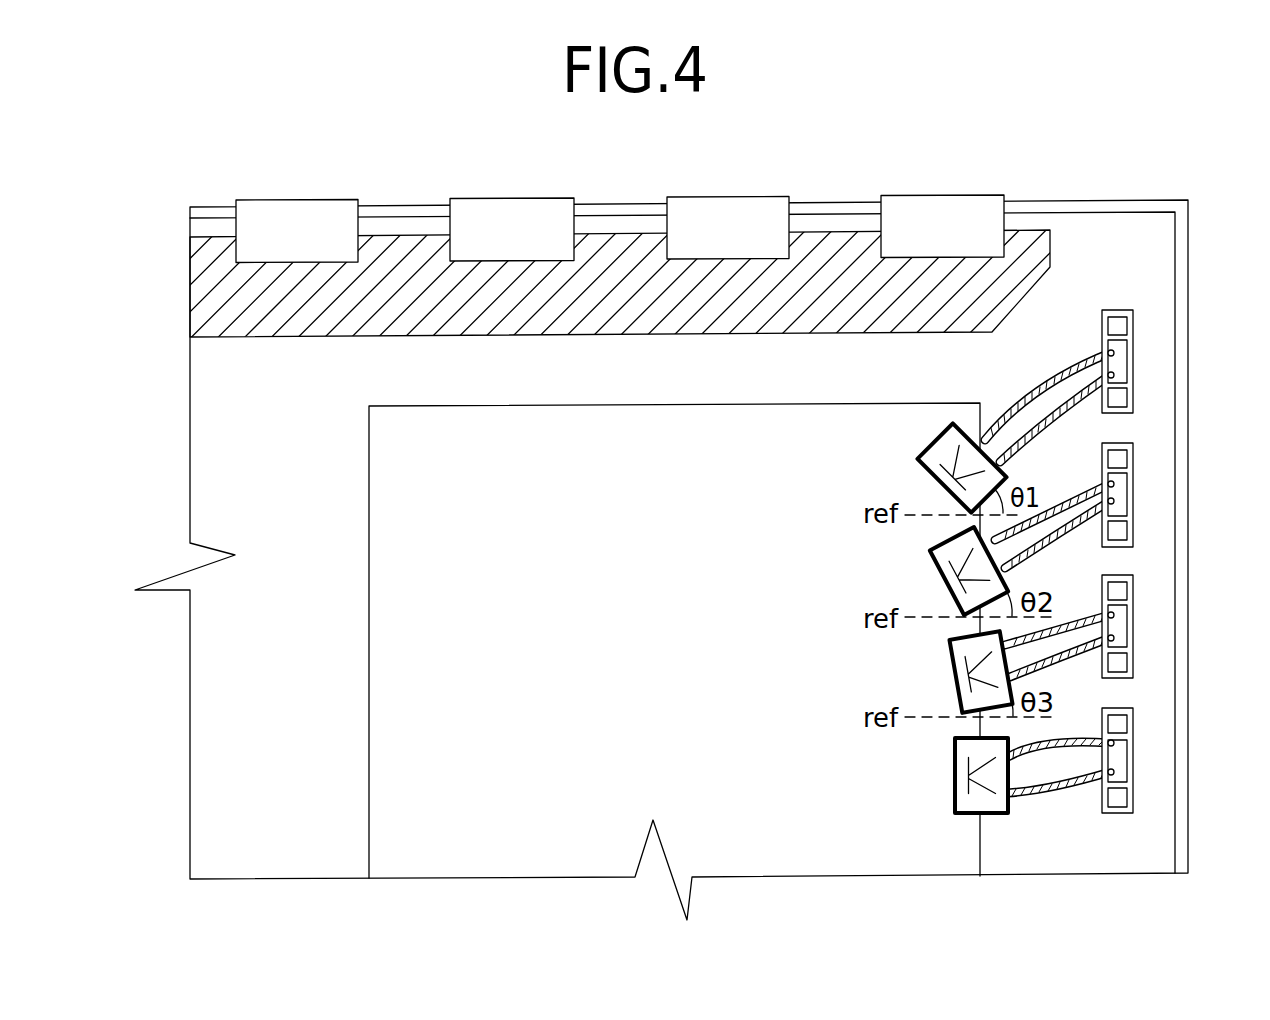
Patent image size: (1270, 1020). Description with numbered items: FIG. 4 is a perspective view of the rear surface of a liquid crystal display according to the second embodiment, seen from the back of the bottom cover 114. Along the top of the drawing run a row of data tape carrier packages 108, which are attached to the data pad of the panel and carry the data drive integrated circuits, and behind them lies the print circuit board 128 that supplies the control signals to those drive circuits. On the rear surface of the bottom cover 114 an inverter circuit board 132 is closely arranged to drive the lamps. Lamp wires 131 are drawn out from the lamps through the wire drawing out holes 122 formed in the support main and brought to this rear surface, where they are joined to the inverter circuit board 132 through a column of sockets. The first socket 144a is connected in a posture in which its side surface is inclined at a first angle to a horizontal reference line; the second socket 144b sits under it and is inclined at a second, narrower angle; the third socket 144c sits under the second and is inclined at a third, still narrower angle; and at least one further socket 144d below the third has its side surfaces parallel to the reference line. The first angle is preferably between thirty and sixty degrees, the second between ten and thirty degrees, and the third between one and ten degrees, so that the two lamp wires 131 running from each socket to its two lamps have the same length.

The data tape carrier package 108 is at (926, 195).
The print circuit board 128 is at (1027, 262).
The lamp wires 131 is at (1058, 378).
The bottom cover 114 is at (303, 440).
The inverter circuit board 132 is at (682, 499).
The wire drawing out holes 122 is at (1122, 497).
The first socket 144a is at (932, 446).
The second socket 144b is at (935, 572).
The third socket 144c is at (950, 680).
The socket 144d is at (955, 783).